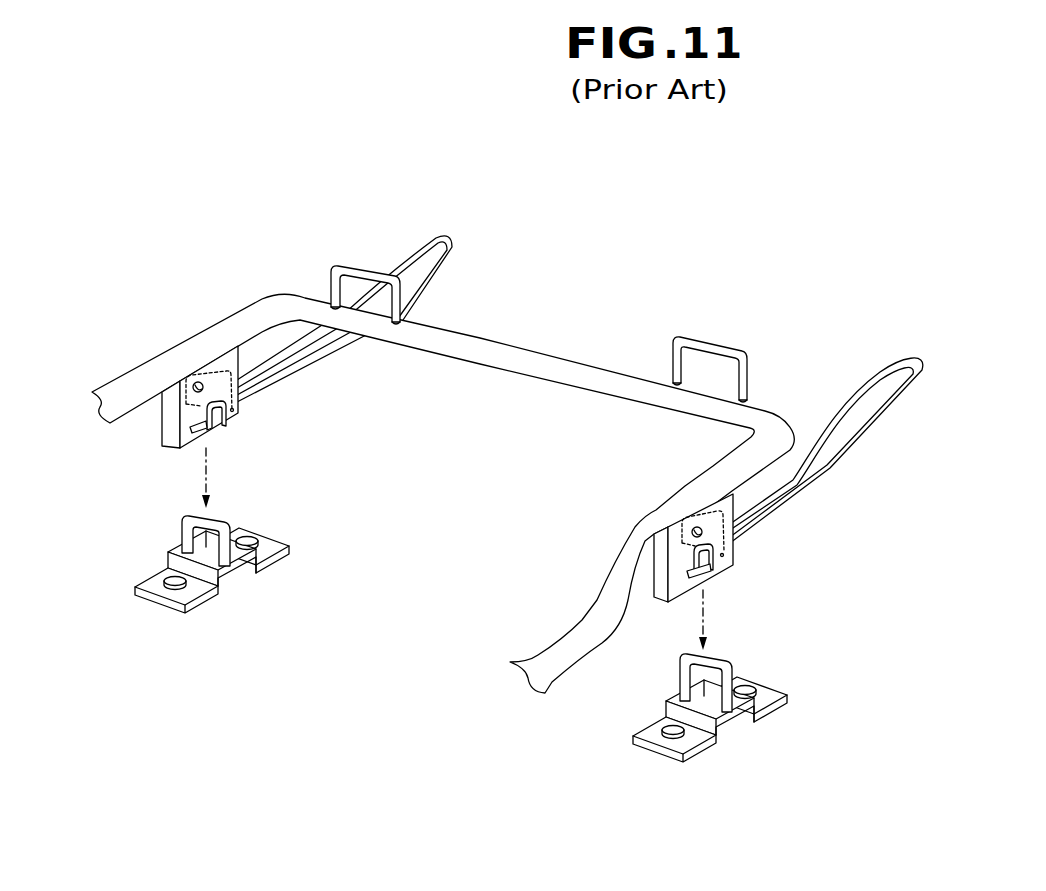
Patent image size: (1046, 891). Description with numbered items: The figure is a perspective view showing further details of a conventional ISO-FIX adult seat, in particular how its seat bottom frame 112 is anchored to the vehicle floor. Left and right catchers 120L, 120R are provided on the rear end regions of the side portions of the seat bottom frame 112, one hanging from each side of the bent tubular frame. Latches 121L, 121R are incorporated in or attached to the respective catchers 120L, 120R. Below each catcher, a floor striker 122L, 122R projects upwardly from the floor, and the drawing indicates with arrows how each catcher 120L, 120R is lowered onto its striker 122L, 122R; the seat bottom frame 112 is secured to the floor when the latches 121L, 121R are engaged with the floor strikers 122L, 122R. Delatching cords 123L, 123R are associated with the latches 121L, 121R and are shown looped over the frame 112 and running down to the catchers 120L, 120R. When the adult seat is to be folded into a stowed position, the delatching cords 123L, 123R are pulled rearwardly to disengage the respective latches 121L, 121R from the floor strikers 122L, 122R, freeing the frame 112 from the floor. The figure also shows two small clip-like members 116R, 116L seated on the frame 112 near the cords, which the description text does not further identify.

The seat bottom frame 112 is at (545, 354).
The right clip 116R is at (358, 263).
The left clip 116L is at (718, 340).
The delatching cord 123R is at (441, 233).
The delatching cord 123L is at (878, 362).
The catcher 120R is at (168, 449).
The catcher 120L is at (656, 600).
The latch 121R is at (208, 426).
The latch 121L is at (710, 576).
The floor striker 122R is at (229, 521).
The floor striker 122L is at (735, 658).